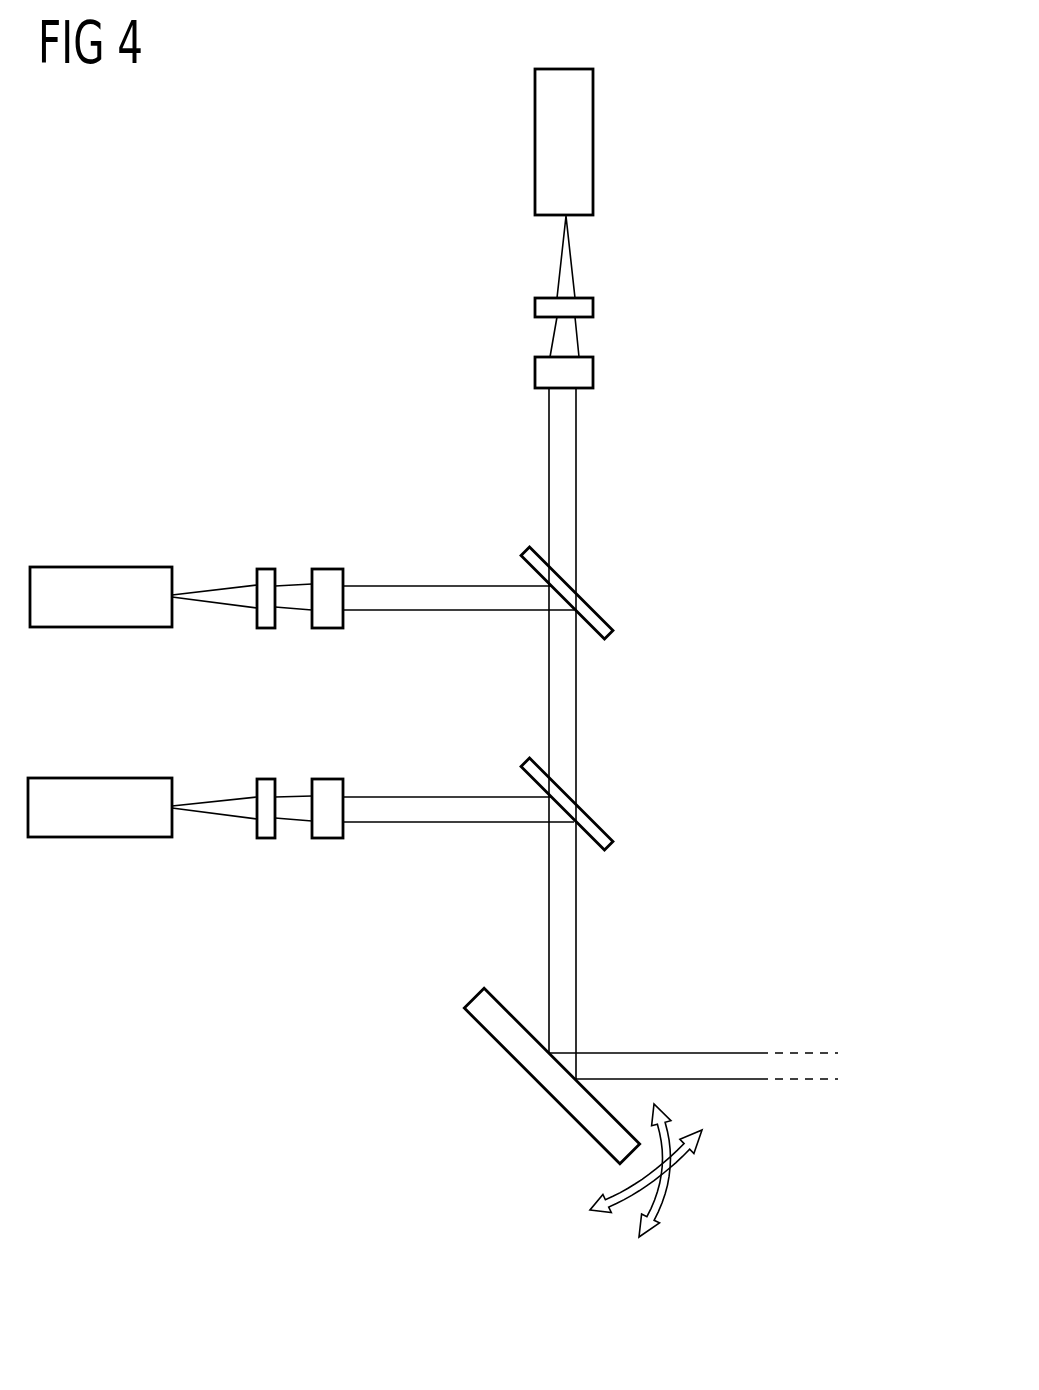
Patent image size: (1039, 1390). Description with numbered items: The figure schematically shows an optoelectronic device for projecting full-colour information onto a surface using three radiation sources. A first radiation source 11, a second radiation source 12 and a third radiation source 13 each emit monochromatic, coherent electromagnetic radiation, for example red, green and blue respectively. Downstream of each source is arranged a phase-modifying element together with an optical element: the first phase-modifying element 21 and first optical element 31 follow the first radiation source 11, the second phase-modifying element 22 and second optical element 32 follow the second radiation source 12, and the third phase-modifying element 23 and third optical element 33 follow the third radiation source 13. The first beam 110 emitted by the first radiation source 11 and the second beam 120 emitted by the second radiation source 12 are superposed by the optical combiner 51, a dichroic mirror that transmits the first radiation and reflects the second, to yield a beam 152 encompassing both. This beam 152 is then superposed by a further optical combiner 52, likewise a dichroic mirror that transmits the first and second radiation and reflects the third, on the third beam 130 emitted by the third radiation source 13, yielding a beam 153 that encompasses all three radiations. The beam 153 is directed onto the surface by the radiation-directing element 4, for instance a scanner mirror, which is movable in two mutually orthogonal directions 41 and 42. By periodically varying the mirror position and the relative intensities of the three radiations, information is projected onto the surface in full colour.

The radiation-directing element 4 is at (553, 1078).
The first radiation source 11 is at (585, 142).
The second radiation source 12 is at (100, 580).
The third radiation source 13 is at (100, 790).
The first phase-modifying element 21 is at (580, 307).
The second phase-modifying element 22 is at (268, 580).
The third phase-modifying element 23 is at (268, 790).
The first optical element 31 is at (580, 373).
The second optical element 32 is at (326, 580).
The third optical element 33 is at (326, 790).
The first direction of mirror movement 41 is at (685, 1163).
The second direction of mirror movement 42 is at (663, 1217).
The optical combiner 51 is at (583, 607).
The further optical combiner 52 is at (583, 817).
The first beam 110 is at (569, 263).
The second beam 120 is at (220, 597).
The third beam 130 is at (220, 807).
The beam 152 is at (568, 680).
The beam 153 is at (568, 903).